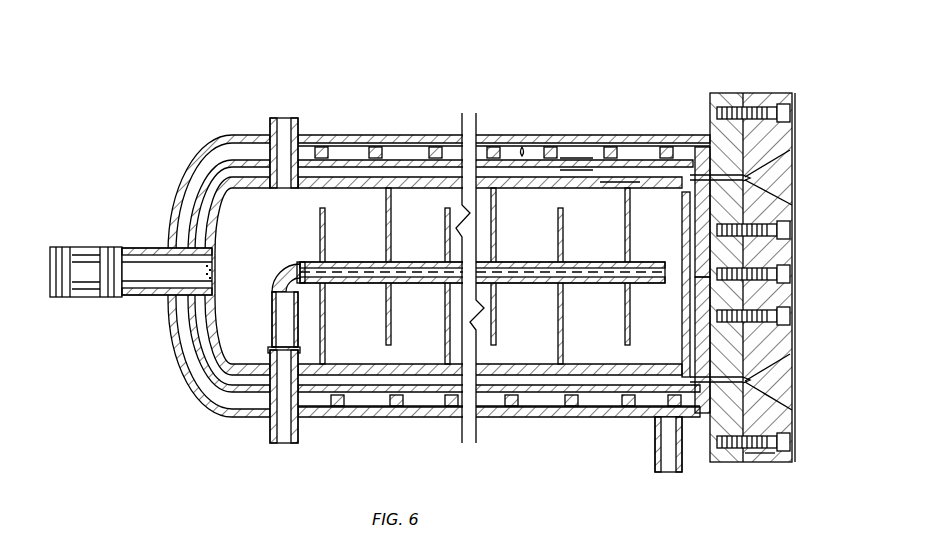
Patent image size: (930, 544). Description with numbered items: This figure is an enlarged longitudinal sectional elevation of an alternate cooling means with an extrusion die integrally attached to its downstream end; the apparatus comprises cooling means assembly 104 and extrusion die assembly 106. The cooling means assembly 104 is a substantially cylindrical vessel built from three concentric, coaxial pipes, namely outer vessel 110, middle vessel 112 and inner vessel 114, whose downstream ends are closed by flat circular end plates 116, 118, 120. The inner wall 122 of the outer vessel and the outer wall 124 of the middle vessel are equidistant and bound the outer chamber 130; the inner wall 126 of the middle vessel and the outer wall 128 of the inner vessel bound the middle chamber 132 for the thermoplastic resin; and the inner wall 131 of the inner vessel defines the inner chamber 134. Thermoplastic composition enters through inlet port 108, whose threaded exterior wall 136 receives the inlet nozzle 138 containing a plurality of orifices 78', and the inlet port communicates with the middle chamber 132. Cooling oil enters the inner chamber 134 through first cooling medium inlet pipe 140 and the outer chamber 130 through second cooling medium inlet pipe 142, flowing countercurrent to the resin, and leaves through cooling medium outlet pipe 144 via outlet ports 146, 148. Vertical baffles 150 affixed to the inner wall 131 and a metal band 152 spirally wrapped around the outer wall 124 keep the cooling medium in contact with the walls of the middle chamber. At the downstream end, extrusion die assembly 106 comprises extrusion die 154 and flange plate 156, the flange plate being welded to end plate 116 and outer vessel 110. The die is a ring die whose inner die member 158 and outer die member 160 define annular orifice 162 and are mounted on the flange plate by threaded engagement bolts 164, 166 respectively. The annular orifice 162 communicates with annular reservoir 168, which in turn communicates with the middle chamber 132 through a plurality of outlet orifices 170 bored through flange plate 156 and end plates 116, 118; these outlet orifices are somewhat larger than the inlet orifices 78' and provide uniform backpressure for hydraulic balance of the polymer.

The orifices 78' is at (439, 297).
The cooling means assembly 104 is at (505, 110).
The extrusion die assembly 106 is at (768, 292).
The inlet port 108 is at (158, 263).
The outer vessel 110 is at (422, 138).
The middle vessel 112 is at (390, 148).
The inner vessel 114 is at (343, 180).
The end plate 116 is at (697, 148).
The end plate 118 is at (690, 300).
The end plate 120 is at (700, 330).
The inner wall of outer vessel 122 is at (522, 147).
The outer wall of middle vessel 124 is at (545, 150).
The inner wall of middle vessel 126 is at (568, 170).
The outer wall of inner vessel 128 is at (608, 178).
The outer chamber 130 is at (323, 405).
The inner wall of inner vessel 131 is at (458, 190).
The middle chamber 132 is at (225, 357).
The inner chamber 134 is at (432, 345).
The exterior wall of inlet port 136 is at (140, 297).
The inlet nozzle 138 is at (68, 247).
The first cooling medium inlet pipe 140 is at (275, 430).
The second cooling medium inlet pipe 142 is at (668, 455).
The cooling medium outlet pipe 144 is at (268, 118).
The cooling medium outlet port 146 is at (268, 140).
The cooling medium outlet port 148 is at (276, 190).
The vertical baffles 150 is at (553, 330).
The metal band 152 is at (668, 152).
The extrusion die 154 is at (769, 281).
The flange plate 156 is at (718, 462).
The inner die member 158 is at (775, 345).
The outer die member 160 is at (750, 462).
The threaded engagement bolts 164 is at (765, 113).
The threaded engagement bolts 166 is at (792, 316).
The annular orifice 162 is at (780, 160).
The annular reservoir 168 is at (746, 179).
The outlet orifices 170 is at (746, 176).